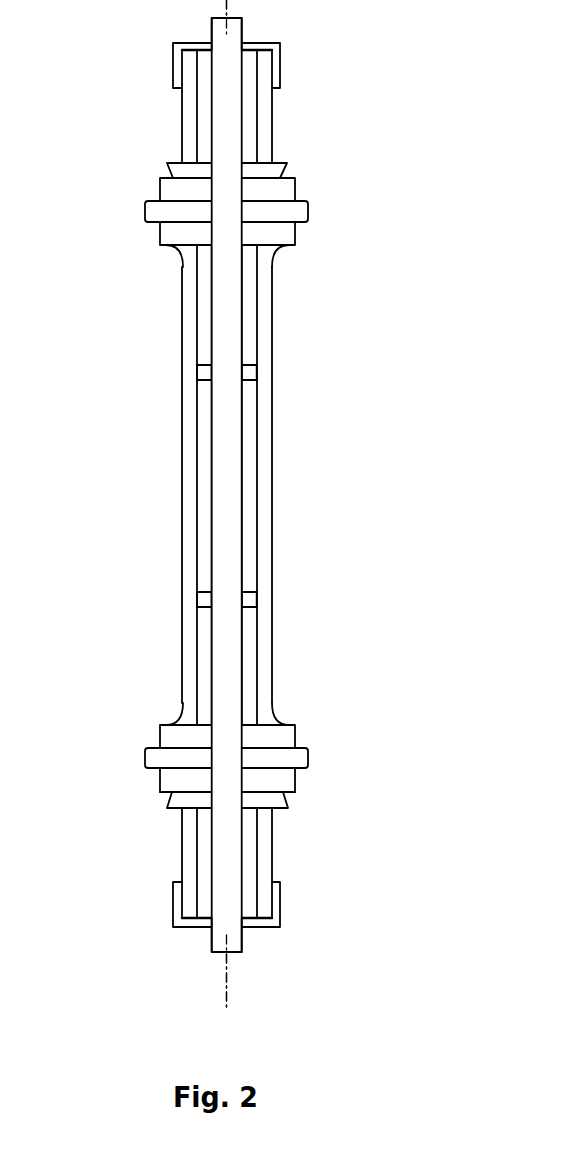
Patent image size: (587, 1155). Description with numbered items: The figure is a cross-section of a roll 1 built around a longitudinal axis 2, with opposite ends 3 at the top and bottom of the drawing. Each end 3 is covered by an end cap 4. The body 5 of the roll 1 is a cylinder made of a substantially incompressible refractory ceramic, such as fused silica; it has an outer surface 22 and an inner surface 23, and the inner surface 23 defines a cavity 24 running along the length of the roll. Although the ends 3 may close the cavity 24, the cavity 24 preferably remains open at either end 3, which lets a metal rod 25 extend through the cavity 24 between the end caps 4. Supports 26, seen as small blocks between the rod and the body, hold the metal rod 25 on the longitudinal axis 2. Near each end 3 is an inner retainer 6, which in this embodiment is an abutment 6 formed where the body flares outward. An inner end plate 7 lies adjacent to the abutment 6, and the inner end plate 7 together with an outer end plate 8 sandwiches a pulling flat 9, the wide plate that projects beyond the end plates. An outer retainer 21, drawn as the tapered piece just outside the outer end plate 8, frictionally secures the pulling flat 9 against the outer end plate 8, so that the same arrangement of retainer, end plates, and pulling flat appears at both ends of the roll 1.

The roll 1 is at (433, 557).
The longitudinal axis 2 is at (228, 987).
The ends 3 is at (190, 48).
The end caps 4 is at (278, 67).
The body 5 is at (145, 443).
The inner retainer 6 is at (173, 248).
The inner end plate 7 is at (297, 240).
The outer end plate 8 is at (295, 785).
The pulling flat 9 is at (145, 210).
The outer retainer 21 is at (288, 165).
The outer surface 22 is at (182, 577).
The inner surface 23 is at (195, 418).
The cavity 24 is at (250, 433).
The metal rod 25 is at (225, 530).
The supports 26 is at (192, 368).